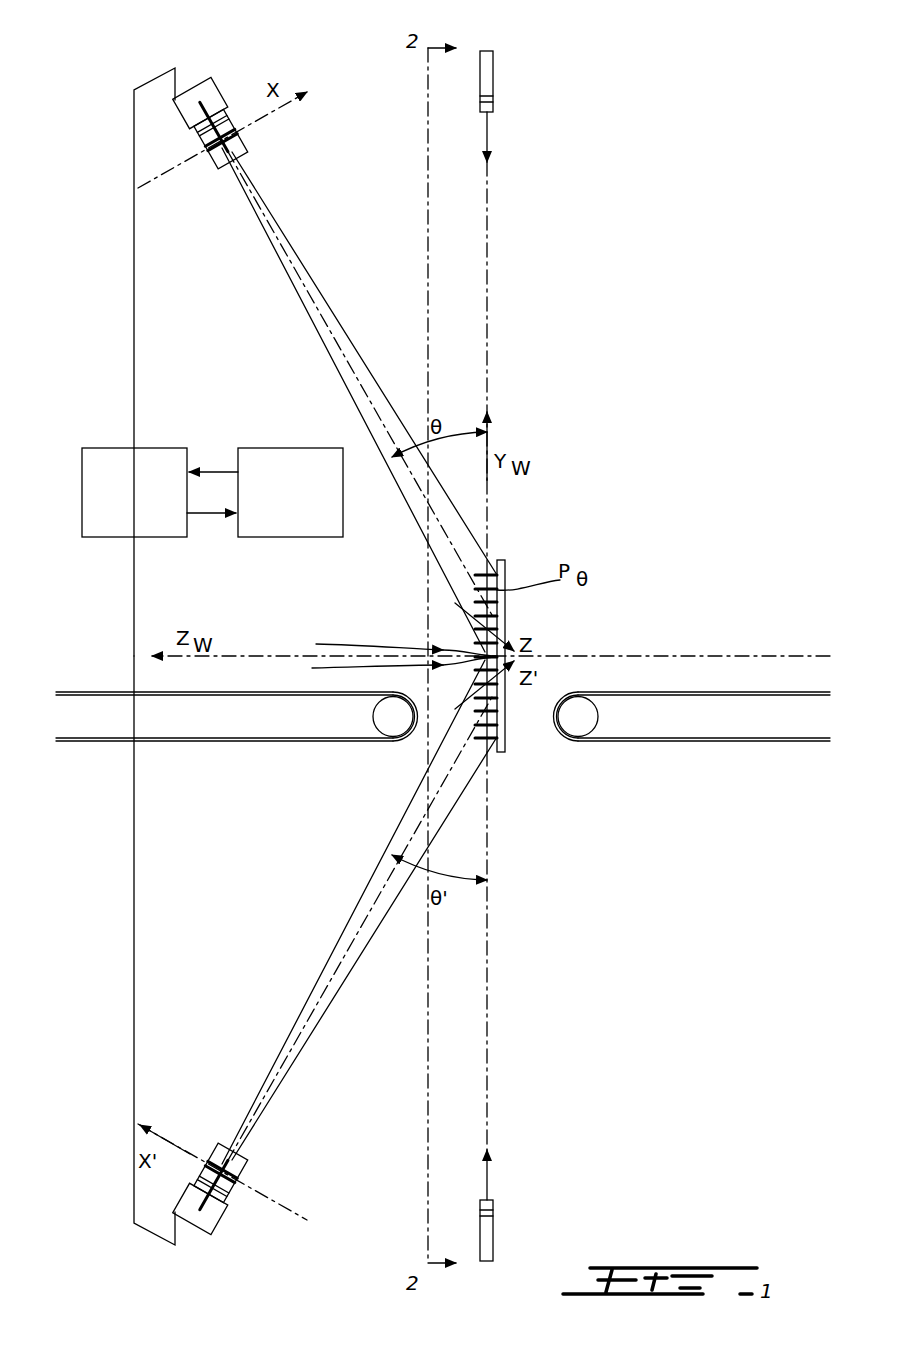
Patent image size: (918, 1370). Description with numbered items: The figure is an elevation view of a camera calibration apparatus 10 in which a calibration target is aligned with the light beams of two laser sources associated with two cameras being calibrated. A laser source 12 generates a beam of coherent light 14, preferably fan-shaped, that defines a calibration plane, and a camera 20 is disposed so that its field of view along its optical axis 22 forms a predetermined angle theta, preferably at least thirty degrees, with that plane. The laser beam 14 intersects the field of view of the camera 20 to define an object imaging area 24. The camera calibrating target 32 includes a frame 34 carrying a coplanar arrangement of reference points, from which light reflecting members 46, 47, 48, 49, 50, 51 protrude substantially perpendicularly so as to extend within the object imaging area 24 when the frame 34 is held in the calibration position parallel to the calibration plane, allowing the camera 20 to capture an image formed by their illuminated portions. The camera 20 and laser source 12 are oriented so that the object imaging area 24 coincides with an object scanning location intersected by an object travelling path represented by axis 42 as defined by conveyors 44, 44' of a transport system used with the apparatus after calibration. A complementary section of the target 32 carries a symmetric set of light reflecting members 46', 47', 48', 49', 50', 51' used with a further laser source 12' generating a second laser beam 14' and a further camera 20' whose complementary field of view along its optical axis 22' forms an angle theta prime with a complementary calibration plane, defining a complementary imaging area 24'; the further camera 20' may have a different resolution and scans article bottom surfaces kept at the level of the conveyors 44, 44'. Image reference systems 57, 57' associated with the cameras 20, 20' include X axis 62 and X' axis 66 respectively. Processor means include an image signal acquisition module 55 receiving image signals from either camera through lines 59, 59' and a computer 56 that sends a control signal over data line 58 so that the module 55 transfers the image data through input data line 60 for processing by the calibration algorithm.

The camera calibration apparatus 10 is at (670, 285).
The laser source 12 is at (526, 81).
The further laser source 12' is at (526, 1230).
The laser beam 14 is at (530, 296).
The second laser beam 14' is at (530, 976).
The camera 20 is at (221, 105).
The further camera 20' is at (222, 1205).
The optical axis 22 is at (359, 400).
The optical axis 22' is at (359, 912).
The object imaging area 24 is at (388, 645).
The object imaging area 24' is at (385, 673).
The camera calibrating target 32 is at (514, 542).
The frame 34 is at (505, 602).
The axis 42 is at (692, 650).
The conveyor 44 is at (236, 748).
The conveyor 44' is at (692, 748).
The light reflecting member 46 is at (437, 551).
The light reflecting member 47 is at (427, 569).
The light reflecting member 48 is at (415, 587).
The light reflecting member 49 is at (427, 606).
The light reflecting member 50 is at (404, 612).
The light reflecting member 51 is at (431, 634).
The light reflecting member 46' is at (513, 774).
The light reflecting member 47' is at (511, 787).
The light reflecting member 48' is at (394, 790).
The light reflecting member 49' is at (387, 769).
The light reflecting member 50' is at (396, 746).
The light reflecting member 51' is at (385, 725).
The image signal acquisition module 55 is at (134, 492).
The computer 56 is at (290, 492).
The image reference system 57 is at (188, 223).
The image reference system 57' is at (195, 1084).
The data line 58 is at (216, 470).
The line 59 is at (166, 362).
The line 59' is at (169, 950).
The input data line 60 is at (216, 514).
The X axis 62 is at (276, 128).
The X' axis 66 is at (285, 1203).